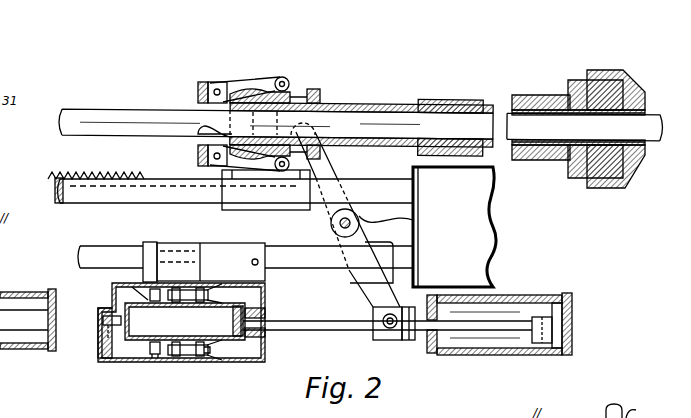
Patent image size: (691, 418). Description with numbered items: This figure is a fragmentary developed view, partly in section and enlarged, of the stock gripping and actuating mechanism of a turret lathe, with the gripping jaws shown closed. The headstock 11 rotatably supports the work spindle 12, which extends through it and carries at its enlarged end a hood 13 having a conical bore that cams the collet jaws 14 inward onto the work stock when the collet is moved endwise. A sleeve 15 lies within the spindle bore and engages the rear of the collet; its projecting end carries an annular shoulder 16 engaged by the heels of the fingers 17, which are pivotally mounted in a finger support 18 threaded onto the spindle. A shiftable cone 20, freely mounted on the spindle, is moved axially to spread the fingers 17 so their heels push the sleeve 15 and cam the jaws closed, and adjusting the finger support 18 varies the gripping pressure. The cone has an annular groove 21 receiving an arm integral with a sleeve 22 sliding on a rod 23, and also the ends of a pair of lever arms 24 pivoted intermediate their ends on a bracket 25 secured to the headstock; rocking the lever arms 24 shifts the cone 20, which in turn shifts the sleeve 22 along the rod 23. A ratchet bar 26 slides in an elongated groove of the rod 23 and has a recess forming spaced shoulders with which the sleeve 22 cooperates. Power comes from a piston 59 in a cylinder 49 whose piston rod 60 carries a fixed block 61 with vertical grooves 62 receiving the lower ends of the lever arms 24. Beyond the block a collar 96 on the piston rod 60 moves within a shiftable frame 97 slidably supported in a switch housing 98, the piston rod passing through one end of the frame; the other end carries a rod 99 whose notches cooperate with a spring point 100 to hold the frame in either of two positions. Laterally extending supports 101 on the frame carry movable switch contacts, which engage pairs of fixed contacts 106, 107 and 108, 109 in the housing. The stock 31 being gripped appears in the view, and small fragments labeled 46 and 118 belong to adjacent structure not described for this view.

The headstock 11 is at (478, 233).
The work spindle 12 is at (456, 100).
The hood 13 is at (628, 82).
The collet jaws 14 is at (650, 110).
The sleeve 15 is at (376, 105).
The annular shoulder 16 is at (210, 128).
The fingers 17 is at (246, 90).
The finger support 18 is at (201, 87).
The shiftable cone 20 is at (293, 94).
The annular groove 21 is at (318, 88).
The sleeve 22 is at (252, 207).
The rod 23 is at (107, 196).
The lever arms 24 is at (372, 282).
The bracket 25 is at (398, 226).
The ratchet bar 26 is at (52, 178).
The bar stock 31 is at (104, 120).
The bolt 46 is at (642, 417).
The cylinder 49 is at (508, 297).
The piston 59 is at (550, 308).
The piston rod 60 is at (485, 332).
The block 61 is at (410, 340).
The vertically arranged grooves 62 is at (382, 340).
The collar 96 is at (232, 342).
The shiftable frame 97 is at (145, 336).
The switch housing 98 is at (147, 350).
The rod 99 is at (102, 320).
The spring point 100 is at (102, 338).
The laterally extending supports 101 is at (185, 290).
The fixed contact 106 is at (153, 278).
The fixed contact 107 is at (219, 280).
The fixed contact 108 is at (155, 360).
The fixed contact 109 is at (203, 352).
The bracket 118 is at (596, 411).